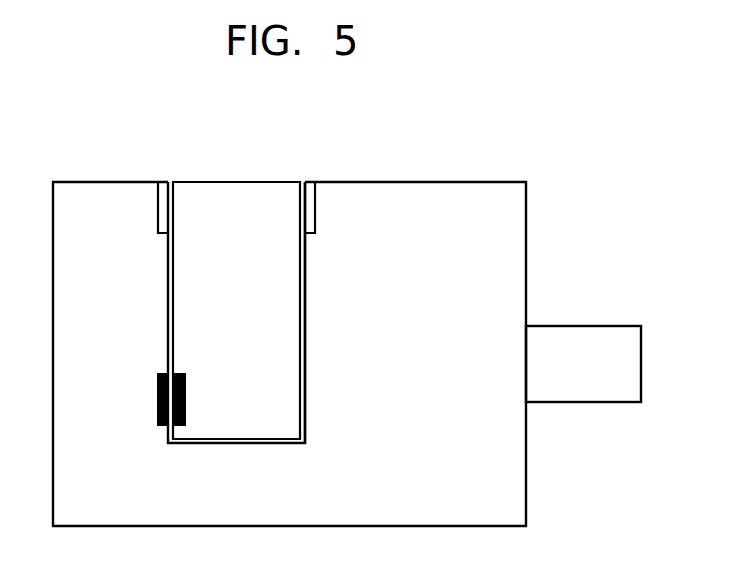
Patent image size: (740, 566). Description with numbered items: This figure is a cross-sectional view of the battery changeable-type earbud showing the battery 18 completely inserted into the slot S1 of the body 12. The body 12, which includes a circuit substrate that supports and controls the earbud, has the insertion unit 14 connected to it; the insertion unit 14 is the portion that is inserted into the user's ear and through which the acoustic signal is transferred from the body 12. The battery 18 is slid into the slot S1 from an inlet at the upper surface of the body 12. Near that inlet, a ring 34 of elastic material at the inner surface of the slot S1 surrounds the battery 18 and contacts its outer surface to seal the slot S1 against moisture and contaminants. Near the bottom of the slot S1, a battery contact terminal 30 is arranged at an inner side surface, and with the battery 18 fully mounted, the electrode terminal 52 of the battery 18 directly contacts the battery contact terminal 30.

The body 12 is at (444, 193).
The insertion unit 14 is at (583, 333).
The battery 18 is at (233, 193).
The battery contact terminal 30 is at (157, 398).
The ring 34 is at (158, 207).
The electrode terminal 52 is at (186, 399).
The slot S1 is at (305, 378).